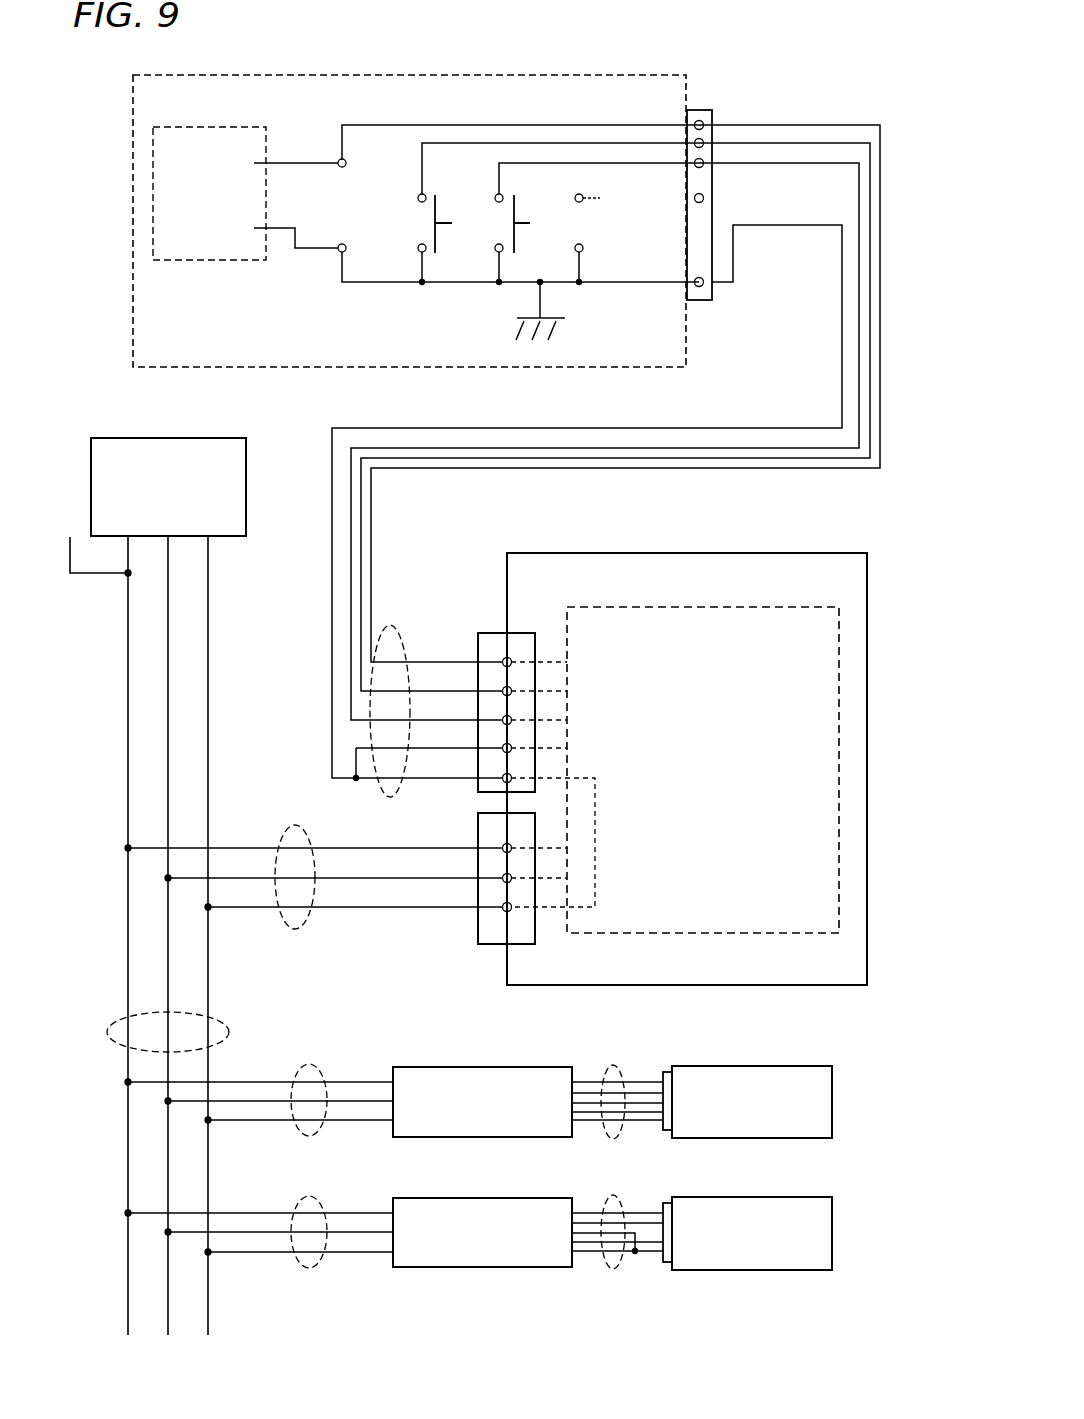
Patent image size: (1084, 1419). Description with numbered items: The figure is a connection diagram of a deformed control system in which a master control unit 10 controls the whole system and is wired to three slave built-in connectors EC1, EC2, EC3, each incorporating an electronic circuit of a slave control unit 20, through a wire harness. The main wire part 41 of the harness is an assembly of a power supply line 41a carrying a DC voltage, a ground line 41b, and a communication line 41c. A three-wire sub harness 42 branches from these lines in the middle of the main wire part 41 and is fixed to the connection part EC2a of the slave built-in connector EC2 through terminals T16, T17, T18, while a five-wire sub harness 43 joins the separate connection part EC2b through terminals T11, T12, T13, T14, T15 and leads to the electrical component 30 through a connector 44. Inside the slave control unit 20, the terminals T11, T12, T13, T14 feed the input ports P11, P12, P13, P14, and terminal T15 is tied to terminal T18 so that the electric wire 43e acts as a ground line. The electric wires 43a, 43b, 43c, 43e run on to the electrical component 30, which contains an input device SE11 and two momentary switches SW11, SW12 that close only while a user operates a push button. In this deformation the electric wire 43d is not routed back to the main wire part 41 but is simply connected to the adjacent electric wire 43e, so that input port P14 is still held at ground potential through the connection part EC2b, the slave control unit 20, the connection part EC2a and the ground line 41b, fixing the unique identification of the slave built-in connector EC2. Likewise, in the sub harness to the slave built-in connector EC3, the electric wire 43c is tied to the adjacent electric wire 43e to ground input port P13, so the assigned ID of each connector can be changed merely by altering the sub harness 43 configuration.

The master control unit 10 is at (158, 438).
The slave control unit 20 is at (675, 718).
The electrical component 30 is at (528, 650).
The main wire part 41 is at (266, 865).
The power supply line 41a is at (128, 690).
The ground line 41b is at (208, 634).
The communication line 41c is at (168, 588).
The sub harness 42 is at (300, 930).
The sub harness 43 is at (581, 721).
The electric wire 43a is at (455, 470).
The electric wire 43b is at (515, 458).
The electric wire 43c is at (572, 448).
The electric wire 43d is at (356, 762).
The electric wire 43e is at (552, 428).
The connector 44 is at (700, 302).
The input device SE11 is at (240, 262).
The switch SW11 is at (420, 195).
The switch SW12 is at (497, 195).
The slave built-in connector EC1 is at (500, 1067).
The slave built-in connector EC2 is at (680, 553).
The connection part EC2a is at (476, 911).
The connection part EC2b is at (494, 682).
The slave built-in connector EC3 is at (500, 1198).
The terminal T11 is at (500, 660).
The terminal T12 is at (500, 689).
The terminal T13 is at (500, 718).
The terminal T14 is at (500, 746).
The terminal T15 is at (500, 776).
The terminal T16 is at (500, 846).
The terminal T17 is at (500, 876).
The terminal T18 is at (500, 905).
The input port P11 is at (597, 662).
The input port P12 is at (597, 691).
The input port P13 is at (597, 720).
The input port P14 is at (597, 748).